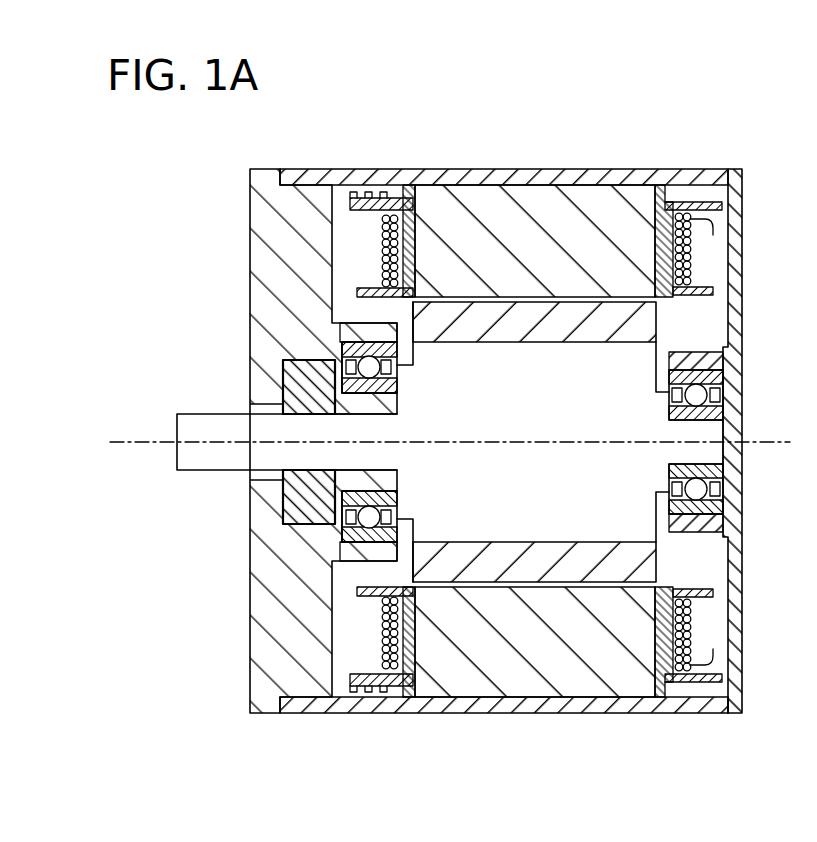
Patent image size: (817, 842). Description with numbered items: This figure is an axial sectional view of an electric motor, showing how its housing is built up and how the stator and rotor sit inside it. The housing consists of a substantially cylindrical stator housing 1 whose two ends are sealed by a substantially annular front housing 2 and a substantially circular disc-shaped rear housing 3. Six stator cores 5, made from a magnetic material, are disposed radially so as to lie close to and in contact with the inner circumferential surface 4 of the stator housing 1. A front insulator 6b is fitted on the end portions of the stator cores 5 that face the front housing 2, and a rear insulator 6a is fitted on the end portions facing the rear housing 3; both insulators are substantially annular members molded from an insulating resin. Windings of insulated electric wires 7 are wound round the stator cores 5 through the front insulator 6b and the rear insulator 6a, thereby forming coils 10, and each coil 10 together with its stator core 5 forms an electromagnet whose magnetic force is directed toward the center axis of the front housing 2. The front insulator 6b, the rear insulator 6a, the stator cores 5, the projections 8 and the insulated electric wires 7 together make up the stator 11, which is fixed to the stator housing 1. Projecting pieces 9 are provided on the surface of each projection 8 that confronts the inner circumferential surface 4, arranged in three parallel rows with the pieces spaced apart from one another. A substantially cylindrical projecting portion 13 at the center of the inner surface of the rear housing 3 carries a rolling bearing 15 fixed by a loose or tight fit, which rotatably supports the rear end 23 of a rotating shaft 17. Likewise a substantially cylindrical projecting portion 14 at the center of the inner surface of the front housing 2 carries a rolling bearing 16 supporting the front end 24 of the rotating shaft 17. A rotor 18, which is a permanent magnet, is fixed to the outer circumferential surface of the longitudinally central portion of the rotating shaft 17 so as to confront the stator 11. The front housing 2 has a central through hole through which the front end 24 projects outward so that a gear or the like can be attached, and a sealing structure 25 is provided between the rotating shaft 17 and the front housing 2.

The stator housing 1 is at (486, 702).
The front housing 2 is at (262, 650).
The rear housing 3 is at (737, 638).
The inner circumferential surface 4 is at (726, 695).
The stator core 5 is at (543, 198).
The rear insulator 6a is at (657, 205).
The front insulator 6b is at (412, 228).
The insulated electric wires 7 is at (707, 200).
The projection 8 is at (357, 192).
The projecting pieces 9 is at (369, 192).
The coil 10 is at (707, 264).
The stator 11 is at (723, 124).
The projecting portion 13 is at (683, 360).
The projecting portion 14 is at (358, 332).
The rolling bearing 15 is at (718, 378).
The rolling bearing 16 is at (345, 360).
The rotating shaft 17 is at (645, 530).
The rotor 18 is at (648, 568).
The rear end 23 is at (713, 432).
The front end 24 is at (212, 462).
The sealing structure 25 is at (290, 385).